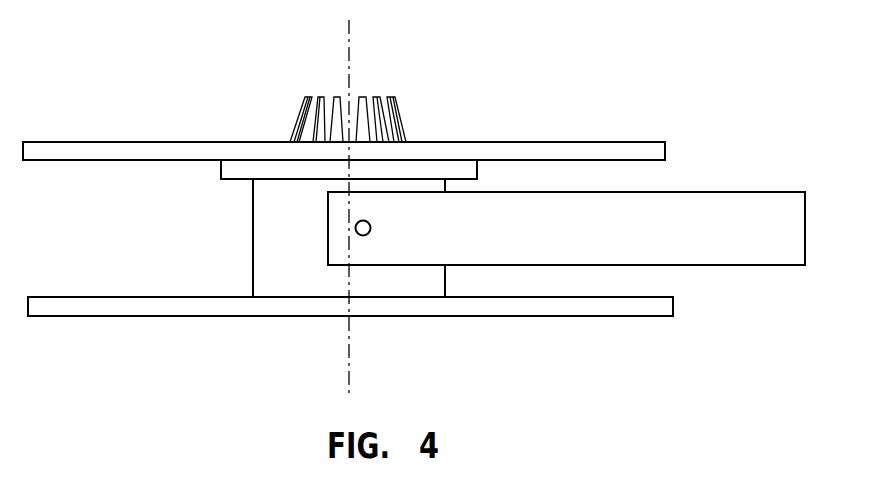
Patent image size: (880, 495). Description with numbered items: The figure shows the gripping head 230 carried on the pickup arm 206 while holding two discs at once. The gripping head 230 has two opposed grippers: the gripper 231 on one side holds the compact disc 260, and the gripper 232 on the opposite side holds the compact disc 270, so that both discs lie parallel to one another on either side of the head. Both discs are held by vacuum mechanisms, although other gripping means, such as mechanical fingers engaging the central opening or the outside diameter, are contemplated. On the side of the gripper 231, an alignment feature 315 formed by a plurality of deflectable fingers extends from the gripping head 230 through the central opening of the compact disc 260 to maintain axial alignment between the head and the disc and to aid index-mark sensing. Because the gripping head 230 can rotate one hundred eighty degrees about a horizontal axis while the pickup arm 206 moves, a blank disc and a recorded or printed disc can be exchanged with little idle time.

The pickup arm 206 is at (744, 192).
The gripping head 230 is at (253, 232).
The gripper 231 is at (422, 168).
The gripper 232 is at (418, 290).
The compact disc 260 is at (180, 142).
The compact disc 270 is at (172, 318).
The alignment feature 315 is at (307, 96).